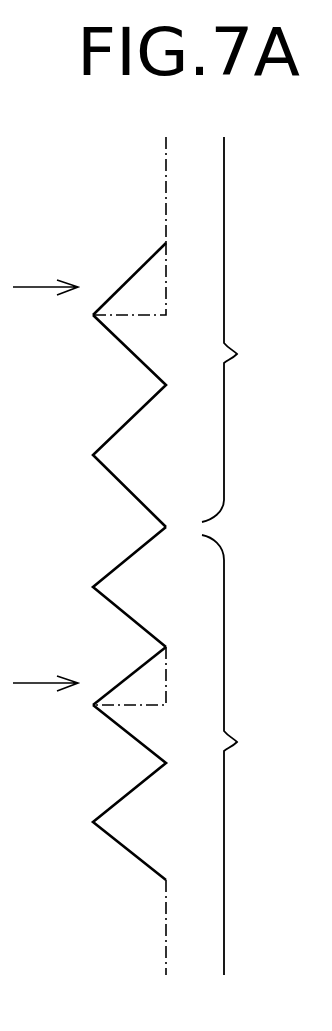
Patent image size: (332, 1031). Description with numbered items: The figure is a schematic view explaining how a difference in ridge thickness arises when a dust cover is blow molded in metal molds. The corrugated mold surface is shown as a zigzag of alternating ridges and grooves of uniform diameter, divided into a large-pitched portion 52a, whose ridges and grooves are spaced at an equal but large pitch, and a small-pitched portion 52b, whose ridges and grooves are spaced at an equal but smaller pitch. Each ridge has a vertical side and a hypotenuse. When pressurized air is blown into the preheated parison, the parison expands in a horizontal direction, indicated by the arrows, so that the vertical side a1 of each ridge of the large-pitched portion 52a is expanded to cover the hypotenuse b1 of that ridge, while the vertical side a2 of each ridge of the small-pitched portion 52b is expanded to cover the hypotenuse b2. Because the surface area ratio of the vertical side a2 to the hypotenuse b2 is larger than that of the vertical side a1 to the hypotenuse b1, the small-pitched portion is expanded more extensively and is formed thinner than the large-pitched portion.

The hypotenuse b1 is at (137, 272).
The vertical side a1 is at (167, 280).
The hypotenuse b2 is at (128, 675).
The vertical side a2 is at (167, 682).
The large-pitched portion 52a is at (193, 332).
The small-pitched portion 52b is at (193, 751).